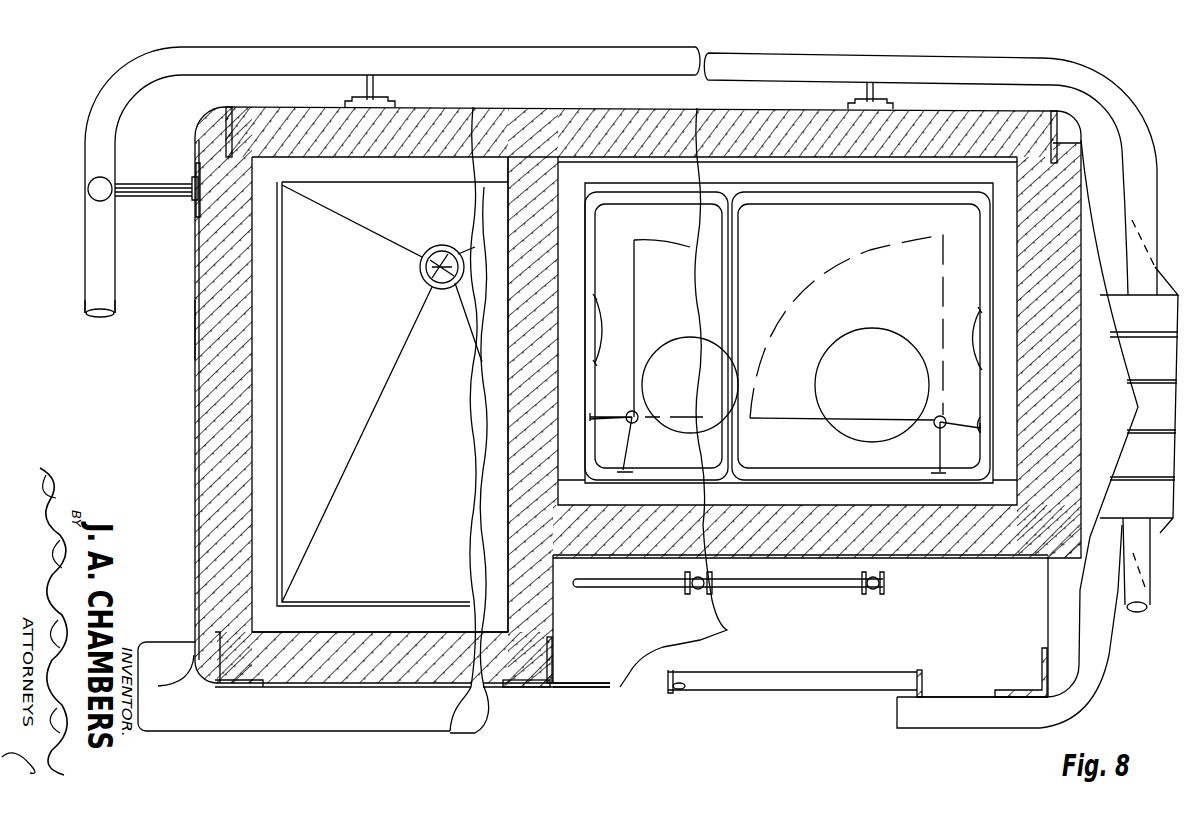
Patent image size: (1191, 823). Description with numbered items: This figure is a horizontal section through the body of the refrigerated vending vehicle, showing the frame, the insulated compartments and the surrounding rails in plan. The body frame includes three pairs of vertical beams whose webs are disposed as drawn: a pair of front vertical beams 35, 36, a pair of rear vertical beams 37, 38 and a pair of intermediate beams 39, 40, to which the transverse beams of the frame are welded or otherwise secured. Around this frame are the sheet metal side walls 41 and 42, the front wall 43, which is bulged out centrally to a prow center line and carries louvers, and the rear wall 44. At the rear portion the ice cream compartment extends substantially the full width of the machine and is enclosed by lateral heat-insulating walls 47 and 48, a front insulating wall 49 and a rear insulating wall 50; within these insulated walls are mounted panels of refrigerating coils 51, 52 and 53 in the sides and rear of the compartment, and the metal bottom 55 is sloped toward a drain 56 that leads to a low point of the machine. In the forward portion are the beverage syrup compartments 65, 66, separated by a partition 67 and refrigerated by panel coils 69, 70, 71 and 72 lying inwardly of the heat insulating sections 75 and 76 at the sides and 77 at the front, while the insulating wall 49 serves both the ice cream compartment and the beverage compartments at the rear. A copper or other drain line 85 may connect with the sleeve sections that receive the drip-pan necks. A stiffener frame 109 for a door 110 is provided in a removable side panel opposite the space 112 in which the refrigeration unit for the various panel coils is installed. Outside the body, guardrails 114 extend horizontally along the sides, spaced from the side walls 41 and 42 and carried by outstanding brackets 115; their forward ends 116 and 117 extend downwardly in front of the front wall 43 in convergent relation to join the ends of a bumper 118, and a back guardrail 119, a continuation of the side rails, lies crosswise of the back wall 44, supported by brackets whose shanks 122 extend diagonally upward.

The front vertical beam 35 is at (1030, 111).
The front vertical beam 36 is at (1010, 693).
The rear vertical beam 37 is at (226, 115).
The rear vertical beam 38 is at (230, 683).
The intermediate vertical beam 39 is at (527, 107).
The intermediate vertical beam 40 is at (517, 687).
The side wall 41 is at (607, 107).
The side wall 42 is at (583, 687).
The front wall 43 is at (1092, 217).
The rear wall 44 is at (197, 330).
The lateral heat-insulating wall 47 is at (398, 112).
The lateral heat-insulating wall 48 is at (363, 655).
The front insulating wall 49 is at (208, 418).
The rear insulating wall 50 is at (480, 390).
The refrigerating coil panel 51 is at (387, 172).
The refrigerating coil panel 52 is at (310, 620).
The refrigerating coil panel 53 is at (272, 282).
The metal bottom 55 is at (297, 508).
The drain 56 is at (423, 277).
The beverage syrup compartment 65 is at (670, 280).
The beverage syrup compartment 66 is at (910, 218).
The partition 67 is at (735, 290).
The panel coil 69 is at (713, 167).
The panel coil 70 is at (866, 496).
The panel coil 71 is at (507, 430).
The panel coil 72 is at (1000, 249).
The heat insulating section 75 is at (803, 135).
The heat insulating section 76 is at (773, 550).
The front heat insulating section 77 is at (1013, 273).
The drain line 85 is at (593, 583).
The stiffener frame 109 is at (918, 673).
The door 110 is at (730, 690).
The space 112 is at (795, 652).
The guardrail 114 is at (270, 60).
The outrigger bracket 115 is at (370, 90).
The forward guardrail end 116 is at (1133, 602).
The forward guardrail end 117 is at (1097, 95).
The bumper 118 is at (1138, 463).
The back guardrail 119 is at (93, 295).
The bracket shank 122 is at (130, 195).